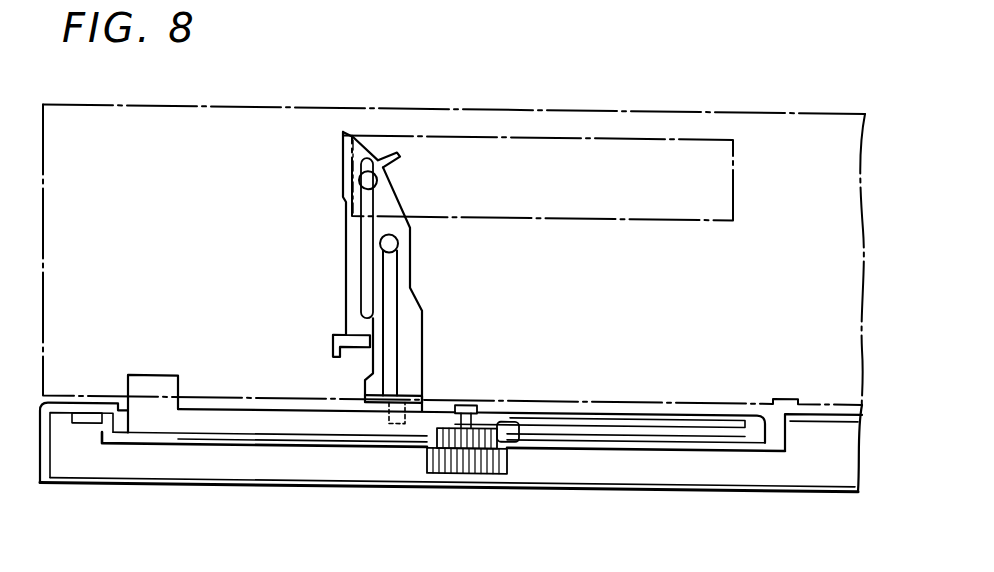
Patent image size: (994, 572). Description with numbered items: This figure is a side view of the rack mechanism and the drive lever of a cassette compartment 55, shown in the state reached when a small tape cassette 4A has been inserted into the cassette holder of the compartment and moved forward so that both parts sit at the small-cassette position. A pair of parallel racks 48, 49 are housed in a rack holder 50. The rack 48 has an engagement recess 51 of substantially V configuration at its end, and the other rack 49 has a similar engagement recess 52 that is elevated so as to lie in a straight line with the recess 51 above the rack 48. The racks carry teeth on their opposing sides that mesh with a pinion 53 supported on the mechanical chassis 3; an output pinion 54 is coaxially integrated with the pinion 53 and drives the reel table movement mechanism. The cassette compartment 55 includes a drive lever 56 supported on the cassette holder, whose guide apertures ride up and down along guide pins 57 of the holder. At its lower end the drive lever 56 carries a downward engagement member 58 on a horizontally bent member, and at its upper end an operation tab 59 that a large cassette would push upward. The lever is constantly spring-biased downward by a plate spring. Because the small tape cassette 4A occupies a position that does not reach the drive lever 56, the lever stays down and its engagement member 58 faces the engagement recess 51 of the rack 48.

The mechanical chassis 3 is at (65, 400).
The small tape cassette 4A is at (497, 131).
The rack 48 is at (686, 415).
The rack 49 is at (193, 423).
The rack holder 50 is at (713, 447).
The engagement recess 51 is at (403, 428).
The engagement recess 52 is at (154, 373).
The pinion 53 is at (510, 436).
The output pinion 54 is at (503, 450).
The cassette compartment 55 is at (567, 101).
The drive lever 56 is at (410, 266).
The guide pins 57 is at (377, 176).
The engagement member 58 is at (397, 416).
The operation tab 59 is at (375, 130).